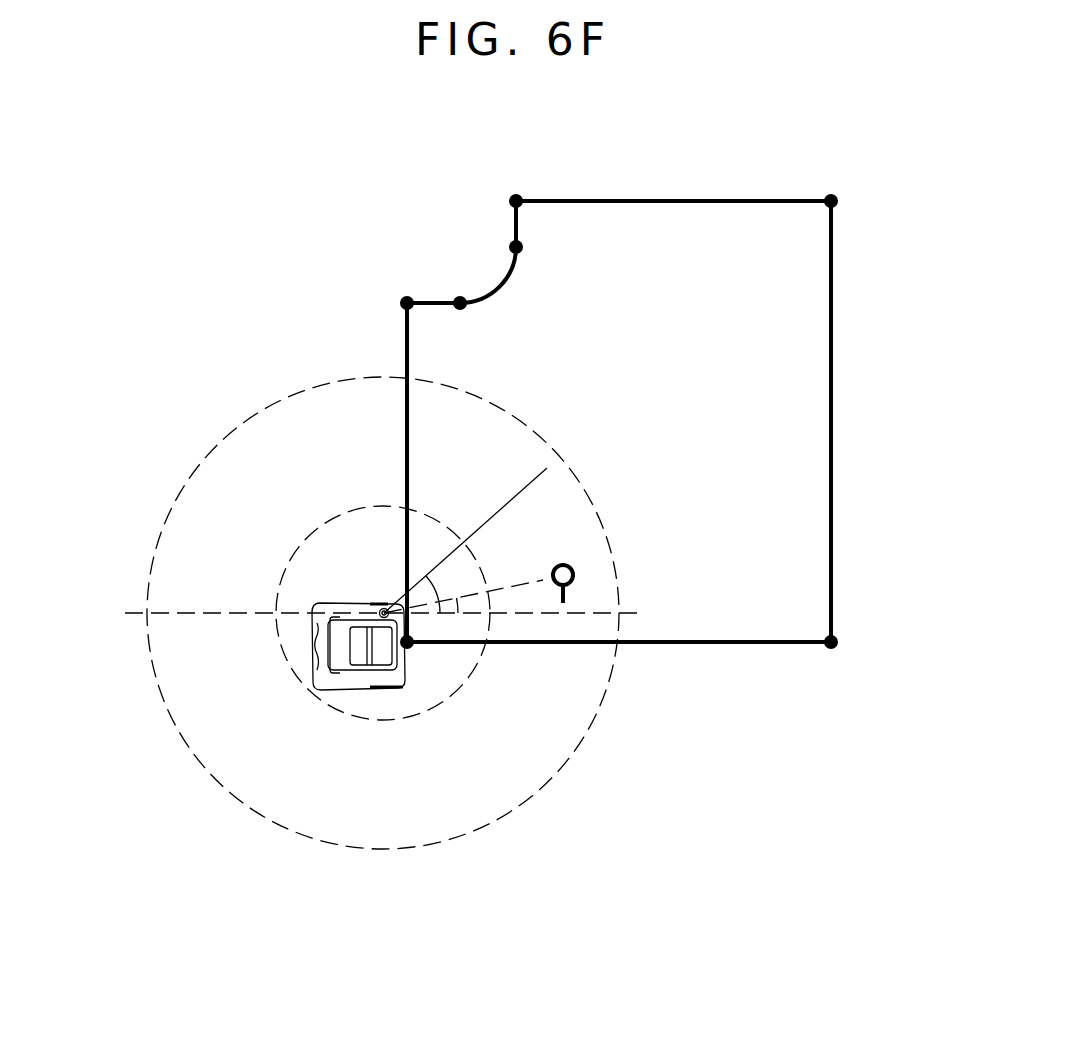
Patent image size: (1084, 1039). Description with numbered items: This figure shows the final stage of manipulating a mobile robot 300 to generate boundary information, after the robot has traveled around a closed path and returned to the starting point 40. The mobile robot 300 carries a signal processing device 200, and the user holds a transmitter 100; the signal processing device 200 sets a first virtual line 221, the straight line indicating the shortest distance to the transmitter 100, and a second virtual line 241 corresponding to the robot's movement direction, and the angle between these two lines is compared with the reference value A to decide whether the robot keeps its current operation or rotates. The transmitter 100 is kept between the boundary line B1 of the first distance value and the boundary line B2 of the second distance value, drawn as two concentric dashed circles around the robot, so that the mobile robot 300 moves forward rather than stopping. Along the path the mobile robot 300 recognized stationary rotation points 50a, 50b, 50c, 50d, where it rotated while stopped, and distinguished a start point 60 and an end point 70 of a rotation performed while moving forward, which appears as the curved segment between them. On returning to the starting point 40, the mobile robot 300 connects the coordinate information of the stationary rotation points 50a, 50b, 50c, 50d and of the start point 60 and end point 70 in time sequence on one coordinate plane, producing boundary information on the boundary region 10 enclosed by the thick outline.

The boundary region 10 is at (832, 393).
The starting point 40 is at (410, 648).
The stationary rotation point 50a is at (405, 296).
The stationary rotation point 50b is at (512, 195).
The stationary rotation point 50c is at (828, 195).
The stationary rotation point 50d is at (834, 649).
The start point 60 is at (458, 297).
The end point 70 is at (511, 244).
The transmitter 100 is at (563, 563).
The signal processing device 200 is at (383, 608).
The first virtual line 221 is at (513, 586).
The second virtual line 241 is at (175, 613).
The mobile robot 300 is at (337, 608).
The reference value A is at (440, 582).
The boundary line of the first distance value B1 is at (359, 507).
The boundary line of the second distance value B2 is at (309, 388).